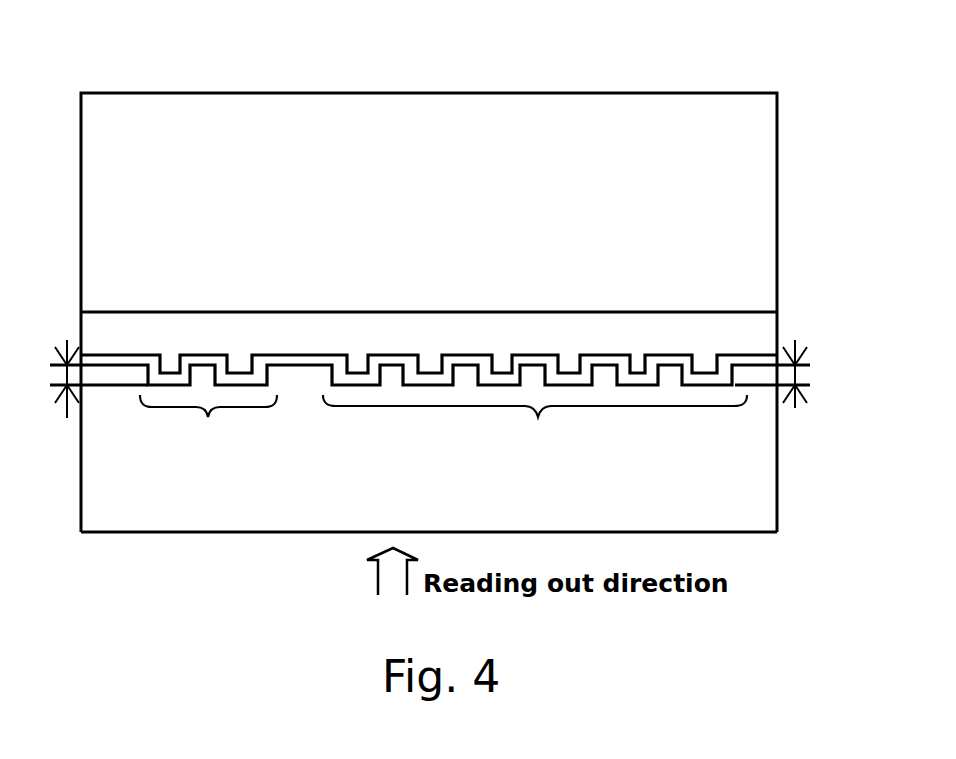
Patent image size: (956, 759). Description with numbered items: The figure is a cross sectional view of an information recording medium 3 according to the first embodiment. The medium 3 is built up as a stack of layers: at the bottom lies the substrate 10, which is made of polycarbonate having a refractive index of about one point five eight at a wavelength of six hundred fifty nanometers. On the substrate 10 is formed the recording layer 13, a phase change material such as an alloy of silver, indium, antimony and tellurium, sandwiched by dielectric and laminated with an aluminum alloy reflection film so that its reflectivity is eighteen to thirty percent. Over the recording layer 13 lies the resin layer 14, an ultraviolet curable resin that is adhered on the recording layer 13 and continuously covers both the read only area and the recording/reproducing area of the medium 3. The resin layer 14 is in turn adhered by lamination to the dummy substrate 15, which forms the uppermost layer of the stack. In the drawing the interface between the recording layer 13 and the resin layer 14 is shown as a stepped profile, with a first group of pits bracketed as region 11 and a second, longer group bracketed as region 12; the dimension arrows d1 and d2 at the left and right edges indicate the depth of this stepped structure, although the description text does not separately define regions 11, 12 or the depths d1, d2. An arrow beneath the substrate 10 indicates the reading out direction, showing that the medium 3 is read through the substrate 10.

The information recording medium 3 is at (655, 86).
The substrate 10 is at (747, 503).
The first pit region 11 is at (192, 453).
The second pit region 12 is at (522, 453).
The recording layer 13 is at (677, 353).
The resin layer 14 is at (467, 338).
The dummy substrate 15 is at (748, 139).
The pit depth d1 is at (48, 379).
The pit depth d2 is at (814, 374).